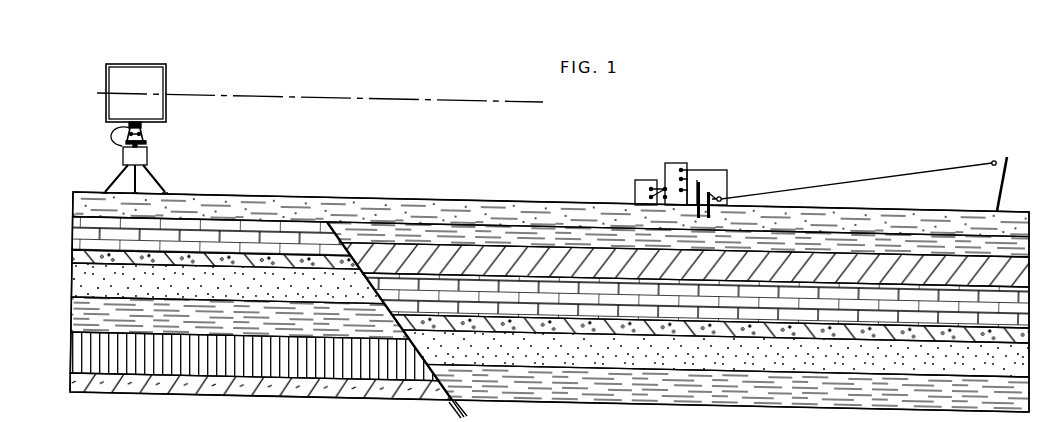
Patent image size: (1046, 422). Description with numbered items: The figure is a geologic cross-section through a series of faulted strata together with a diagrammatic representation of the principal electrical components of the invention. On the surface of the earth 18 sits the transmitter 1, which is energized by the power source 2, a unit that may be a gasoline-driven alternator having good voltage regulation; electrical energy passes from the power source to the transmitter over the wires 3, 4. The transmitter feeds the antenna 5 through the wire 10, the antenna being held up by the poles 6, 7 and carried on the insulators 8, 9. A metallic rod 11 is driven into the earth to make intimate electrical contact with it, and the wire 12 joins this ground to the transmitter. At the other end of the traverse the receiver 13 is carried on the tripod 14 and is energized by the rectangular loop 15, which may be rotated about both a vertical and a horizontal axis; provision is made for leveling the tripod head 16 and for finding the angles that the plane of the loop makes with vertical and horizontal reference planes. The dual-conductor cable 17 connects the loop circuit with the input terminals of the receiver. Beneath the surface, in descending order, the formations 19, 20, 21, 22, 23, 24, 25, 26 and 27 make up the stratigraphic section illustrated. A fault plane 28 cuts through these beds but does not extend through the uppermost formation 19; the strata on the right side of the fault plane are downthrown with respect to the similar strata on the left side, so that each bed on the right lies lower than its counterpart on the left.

The transmitter 1 is at (676, 163).
The power source 2 is at (640, 180).
The wire 3 is at (660, 186).
The wire 4 is at (683, 178).
The antenna 5 is at (856, 180).
The pole 6 is at (724, 198).
The pole 7 is at (1006, 174).
The insulator 8 is at (723, 200).
The insulator 9 is at (996, 160).
The wire 10 is at (700, 176).
The metallic rod 11 is at (710, 197).
The wire 12 is at (701, 193).
The receiver 13 is at (149, 156).
The tripod 14 is at (116, 171).
The rectangular loop 15 is at (168, 76).
The tripod head 16 is at (146, 130).
The dual-conductor cable 17 is at (112, 141).
The surface of the earth 18 is at (445, 200).
The formation 19 is at (551, 214).
The formation 20 is at (678, 239).
The formation 21 is at (685, 265).
The formation 22 is at (550, 273).
The formation 23 is at (550, 296).
The formation 24 is at (550, 320).
The formation 25 is at (550, 354).
The formation 26 is at (254, 356).
The formation 27 is at (261, 386).
The fault plane 28 is at (452, 401).